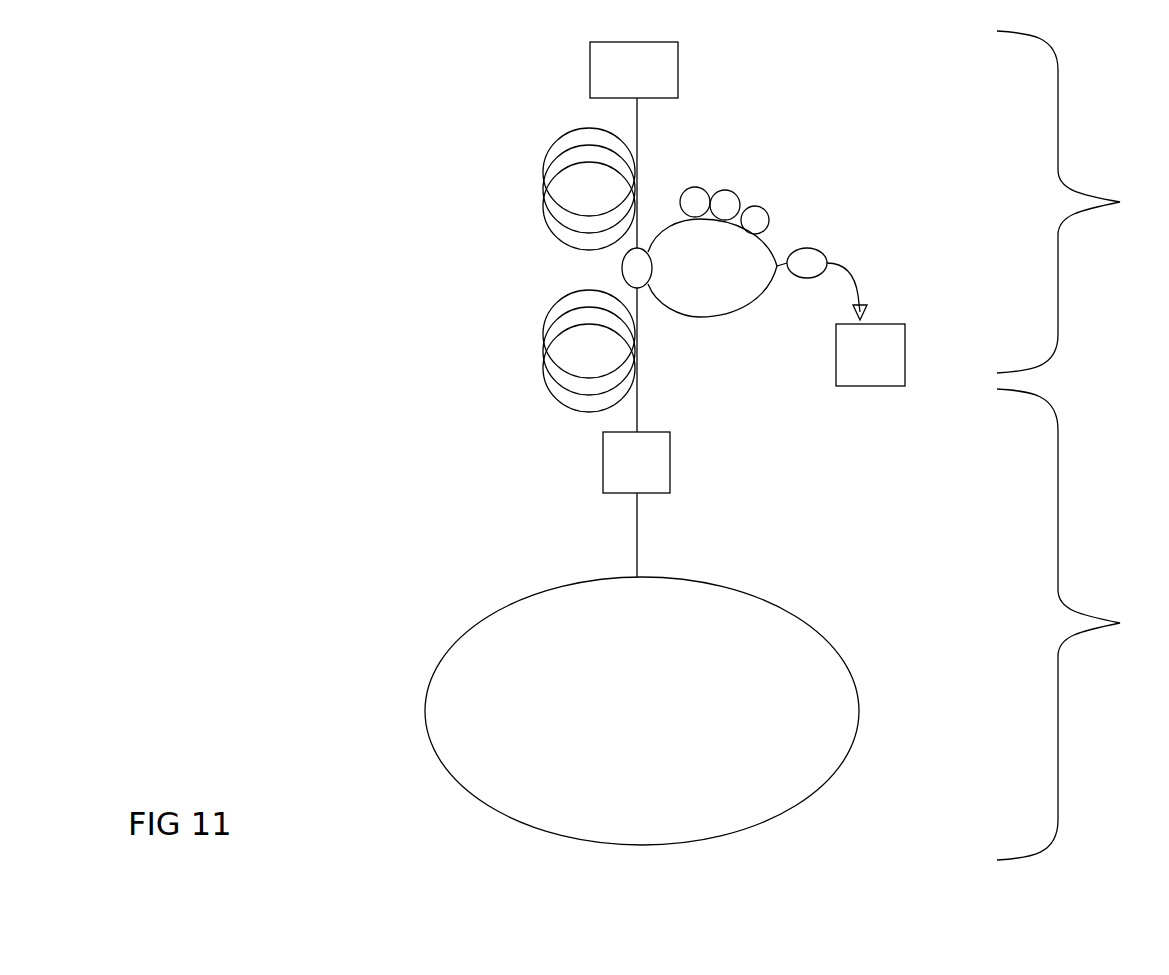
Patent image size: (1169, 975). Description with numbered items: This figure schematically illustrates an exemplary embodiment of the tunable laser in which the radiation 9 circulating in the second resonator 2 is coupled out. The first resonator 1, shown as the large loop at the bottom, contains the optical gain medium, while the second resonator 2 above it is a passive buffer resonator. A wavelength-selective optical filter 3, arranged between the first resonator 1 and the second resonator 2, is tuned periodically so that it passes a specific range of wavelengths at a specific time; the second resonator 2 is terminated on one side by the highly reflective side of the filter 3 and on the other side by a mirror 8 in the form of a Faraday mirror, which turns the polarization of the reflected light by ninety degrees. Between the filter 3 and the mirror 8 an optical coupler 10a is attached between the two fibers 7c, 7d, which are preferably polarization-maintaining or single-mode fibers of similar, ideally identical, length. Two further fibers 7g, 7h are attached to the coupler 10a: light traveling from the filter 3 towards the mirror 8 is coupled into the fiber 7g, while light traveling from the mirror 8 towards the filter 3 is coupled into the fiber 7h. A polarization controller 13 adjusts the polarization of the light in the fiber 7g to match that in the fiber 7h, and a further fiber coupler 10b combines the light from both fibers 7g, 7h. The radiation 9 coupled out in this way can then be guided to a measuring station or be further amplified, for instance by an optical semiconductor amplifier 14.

The first resonator 1 is at (797, 624).
The second resonator 2 is at (1078, 202).
The wavelength-selective optical filter 3 is at (655, 465).
The fiber 7c is at (547, 352).
The fiber 7d is at (545, 190).
The fiber 7g is at (662, 222).
The fiber 7h is at (708, 305).
The mirror 8 is at (590, 69).
The radiation 9 is at (862, 307).
The optical coupler 10a is at (621, 270).
The fiber coupler 10b is at (811, 253).
The polarization controller 13 is at (727, 191).
The optical semiconductor amplifier 14 is at (853, 357).